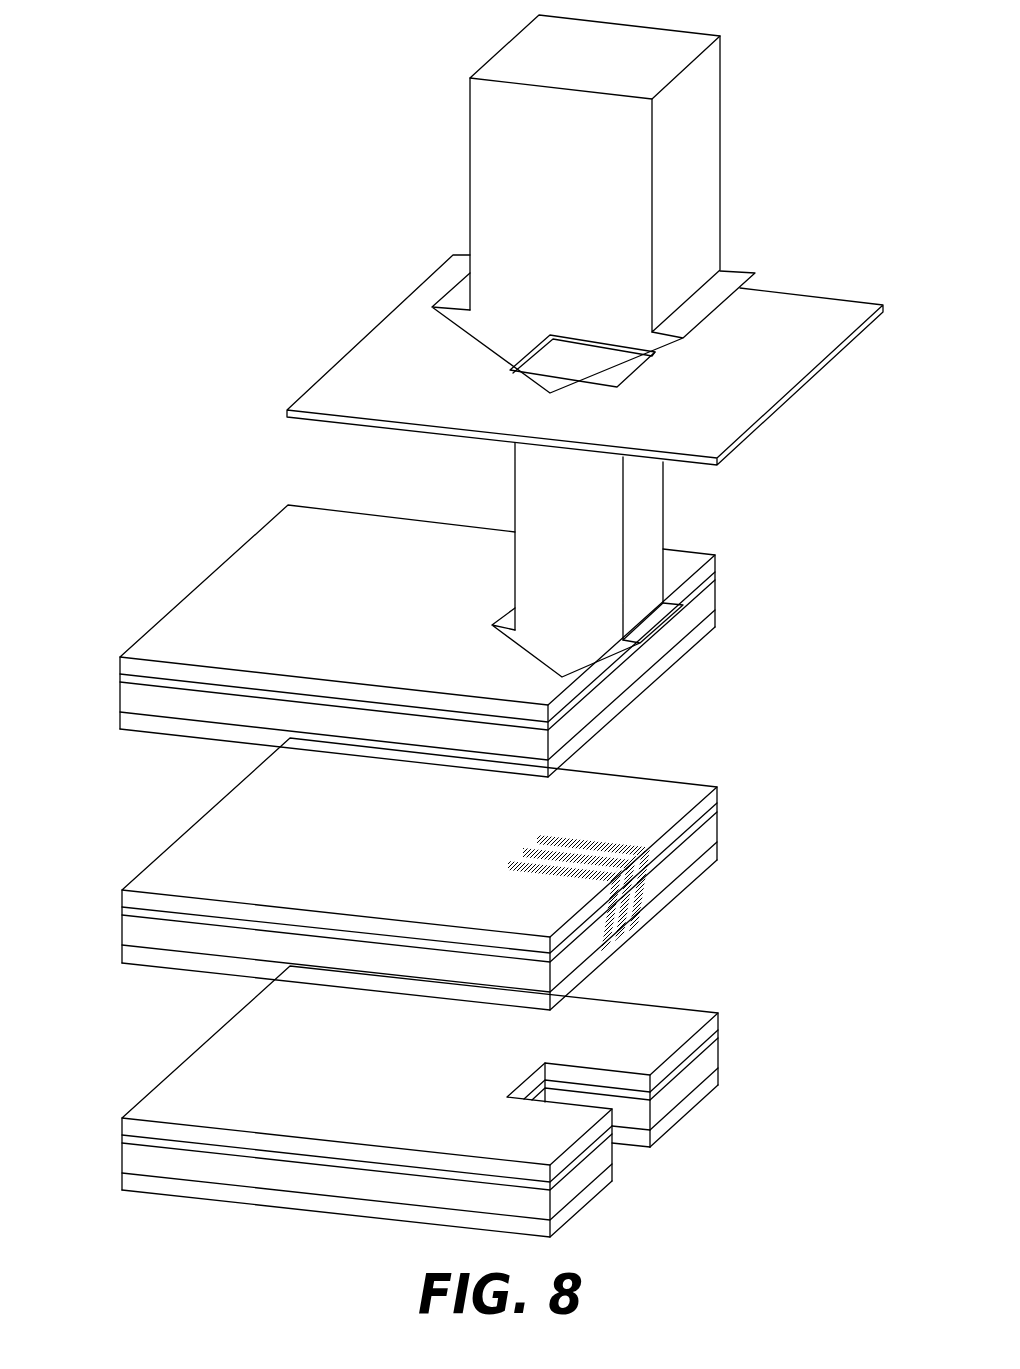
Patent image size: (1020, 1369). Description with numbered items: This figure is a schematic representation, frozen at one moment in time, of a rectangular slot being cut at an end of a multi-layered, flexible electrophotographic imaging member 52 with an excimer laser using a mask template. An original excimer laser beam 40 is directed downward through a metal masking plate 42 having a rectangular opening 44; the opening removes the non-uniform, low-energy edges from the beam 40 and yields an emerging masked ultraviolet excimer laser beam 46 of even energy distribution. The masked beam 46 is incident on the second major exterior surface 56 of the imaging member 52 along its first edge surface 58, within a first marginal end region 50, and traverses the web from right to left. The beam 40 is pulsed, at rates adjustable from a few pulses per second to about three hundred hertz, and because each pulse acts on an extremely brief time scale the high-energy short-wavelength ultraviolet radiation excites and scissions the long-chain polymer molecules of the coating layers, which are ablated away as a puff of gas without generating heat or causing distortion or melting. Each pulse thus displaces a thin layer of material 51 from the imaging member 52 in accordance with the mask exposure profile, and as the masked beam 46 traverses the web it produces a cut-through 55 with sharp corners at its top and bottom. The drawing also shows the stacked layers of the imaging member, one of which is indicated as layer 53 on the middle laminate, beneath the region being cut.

The original excimer laser beam 40 is at (722, 150).
The metal masking plate 42 is at (603, 360).
The rectangular opening 44 is at (622, 375).
The masked ultraviolet excimer laser beam 46 is at (569, 560).
The first marginal end region 50 is at (384, 641).
The thin layer of material 51 is at (540, 837).
The electrophotographic imaging member 52 is at (408, 869).
The middle laminate layer stack 53 is at (445, 874).
The cut-through 55 is at (628, 1162).
The second major exterior surface 56 is at (441, 622).
The first edge surface 58 is at (132, 702).